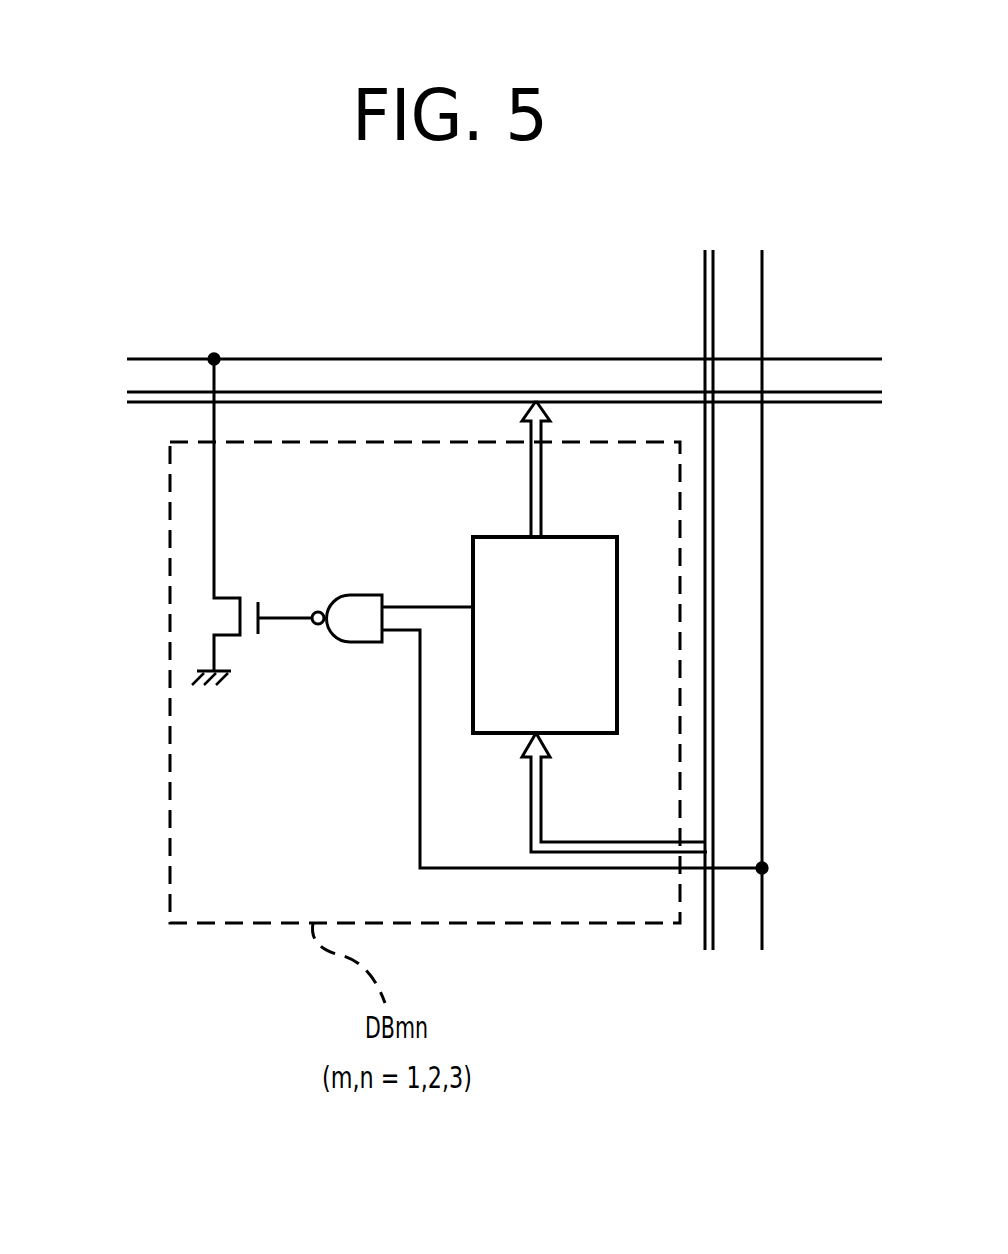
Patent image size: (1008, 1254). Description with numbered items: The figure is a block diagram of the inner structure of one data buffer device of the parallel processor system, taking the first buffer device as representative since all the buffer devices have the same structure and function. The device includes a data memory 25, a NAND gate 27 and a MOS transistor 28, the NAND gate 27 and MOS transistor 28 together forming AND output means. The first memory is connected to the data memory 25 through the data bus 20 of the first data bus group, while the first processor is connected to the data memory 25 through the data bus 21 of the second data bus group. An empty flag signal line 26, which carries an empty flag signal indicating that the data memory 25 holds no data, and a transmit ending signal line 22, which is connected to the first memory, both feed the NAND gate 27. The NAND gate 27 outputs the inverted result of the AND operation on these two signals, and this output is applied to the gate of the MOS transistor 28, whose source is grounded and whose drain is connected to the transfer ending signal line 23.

The data bus 20 is at (705, 332).
The data bus 21 is at (815, 402).
The transmit ending signal line 22 is at (762, 832).
The transfer ending signal line 23 is at (372, 357).
The data memory 25 is at (617, 692).
The empty flag signal line 26 is at (437, 605).
The NAND gate 27 is at (370, 645).
The MOS transistor 28 is at (215, 618).